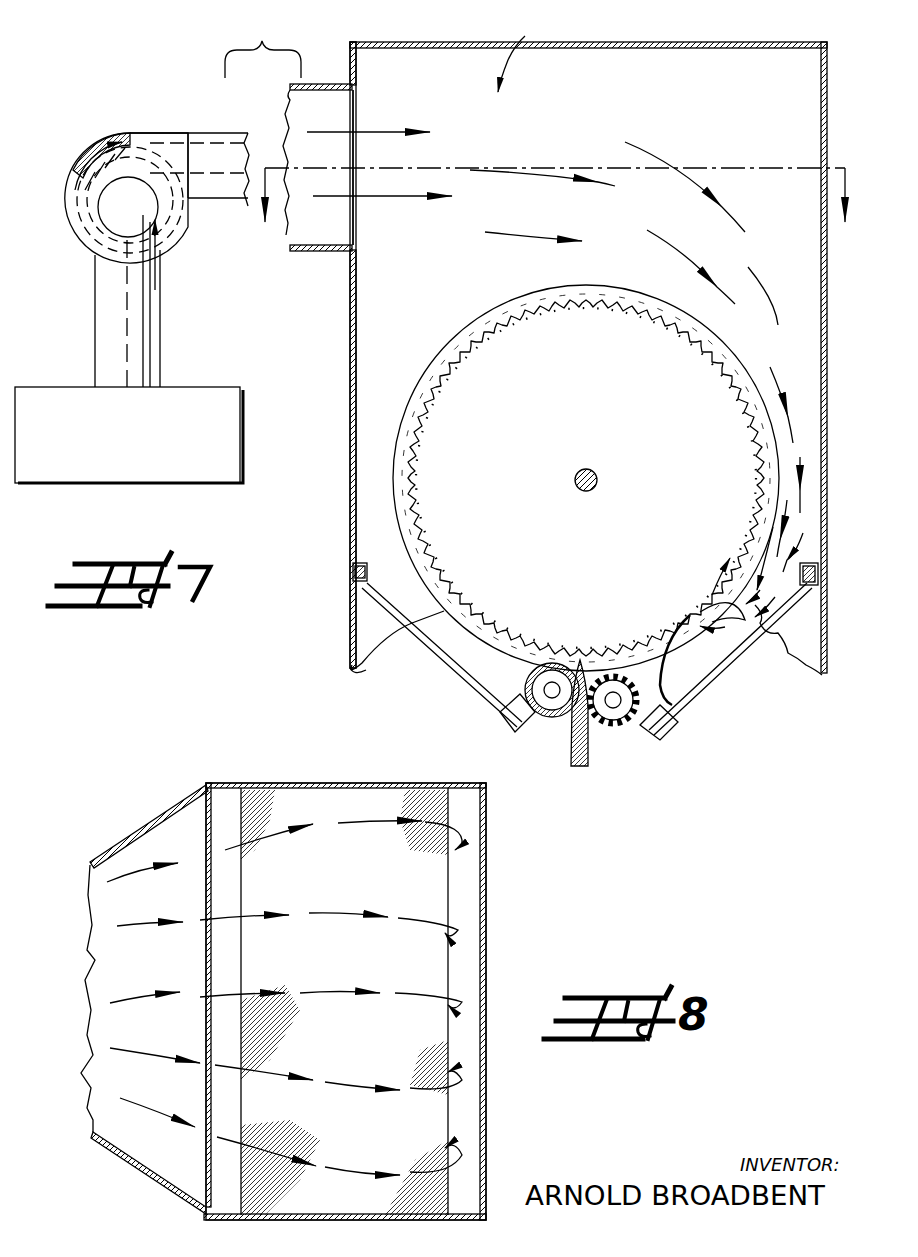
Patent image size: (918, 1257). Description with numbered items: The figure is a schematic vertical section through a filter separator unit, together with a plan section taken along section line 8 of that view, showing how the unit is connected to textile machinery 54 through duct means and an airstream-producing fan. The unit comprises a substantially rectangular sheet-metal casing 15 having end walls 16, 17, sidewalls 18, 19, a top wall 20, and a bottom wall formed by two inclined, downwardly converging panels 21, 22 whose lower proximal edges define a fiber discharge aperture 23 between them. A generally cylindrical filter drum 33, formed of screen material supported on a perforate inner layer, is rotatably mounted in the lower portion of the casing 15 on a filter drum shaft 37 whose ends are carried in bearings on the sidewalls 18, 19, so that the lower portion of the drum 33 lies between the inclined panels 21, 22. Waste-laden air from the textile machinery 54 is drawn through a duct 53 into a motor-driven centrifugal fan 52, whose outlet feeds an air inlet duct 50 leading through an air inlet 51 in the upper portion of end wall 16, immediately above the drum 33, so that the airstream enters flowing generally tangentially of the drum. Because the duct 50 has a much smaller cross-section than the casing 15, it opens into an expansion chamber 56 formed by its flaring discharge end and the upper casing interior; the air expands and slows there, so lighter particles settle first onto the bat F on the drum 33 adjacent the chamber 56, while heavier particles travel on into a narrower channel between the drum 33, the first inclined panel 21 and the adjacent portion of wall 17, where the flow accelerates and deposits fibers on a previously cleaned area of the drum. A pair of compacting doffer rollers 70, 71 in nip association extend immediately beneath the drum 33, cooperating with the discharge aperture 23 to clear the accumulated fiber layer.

In FIG. 7, the casing 15 is at (562, 357).
In FIG. 8, the casing 15 is at (341, 984).
In FIG. 7, the end wall 16 is at (352, 348).
In FIG. 8, the end wall 16 is at (214, 789).
In FIG. 7, the end wall 17 is at (826, 352).
In FIG. 8, the end wall 17 is at (480, 884).
In FIG. 7, the sidewall 18 is at (697, 143).
In FIG. 8, the sidewall 18 is at (405, 780).
In FIG. 8, the sidewall 19 is at (318, 1220).
In FIG. 7, the top wall 20 is at (624, 47).
In FIG. 7, the inclined panel 21 is at (711, 656).
In FIG. 7, the inclined panel 22 is at (442, 650).
In FIG. 7, the fiber discharge aperture 23 is at (586, 728).
In FIG. 7, the filter drum 33 is at (586, 464).
In FIG. 8, the filter drum 33 is at (460, 943).
In FIG. 7, the filter drum shaft 37 is at (596, 470).
In FIG. 7, the air inlet duct 50 is at (291, 104).
In FIG. 8, the air inlet duct 50 is at (116, 852).
In FIG. 7, the air inlet 51 is at (348, 92).
In FIG. 8, the air inlet 51 is at (238, 784).
In FIG. 7, the centrifugal fan 52 is at (97, 150).
In FIG. 7, the duct 53 is at (95, 302).
In FIG. 7, the textile machinery 54 is at (182, 387).
In FIG. 7, the expansion chamber 56 is at (555, 321).
In FIG. 7, the doffer roller 70 is at (614, 680).
In FIG. 7, the doffer roller 71 is at (526, 686).
In FIG. 7, the section line 8- 8 is at (554, 221).
In FIG. 7, the bat F is at (530, 292).